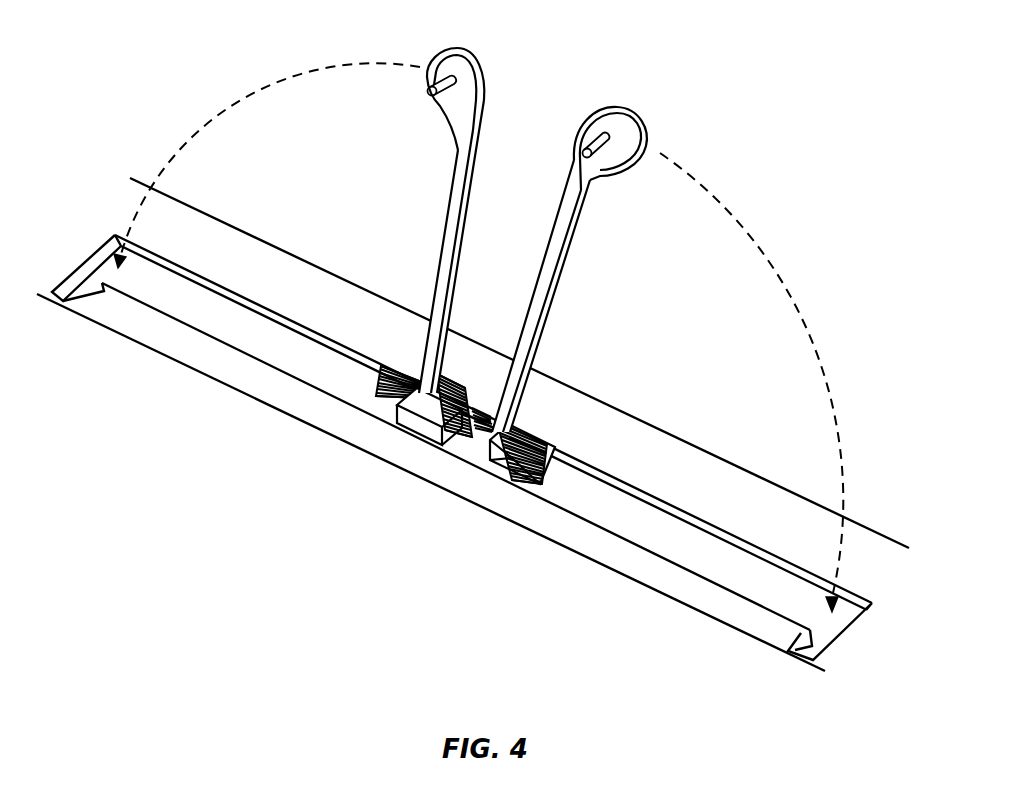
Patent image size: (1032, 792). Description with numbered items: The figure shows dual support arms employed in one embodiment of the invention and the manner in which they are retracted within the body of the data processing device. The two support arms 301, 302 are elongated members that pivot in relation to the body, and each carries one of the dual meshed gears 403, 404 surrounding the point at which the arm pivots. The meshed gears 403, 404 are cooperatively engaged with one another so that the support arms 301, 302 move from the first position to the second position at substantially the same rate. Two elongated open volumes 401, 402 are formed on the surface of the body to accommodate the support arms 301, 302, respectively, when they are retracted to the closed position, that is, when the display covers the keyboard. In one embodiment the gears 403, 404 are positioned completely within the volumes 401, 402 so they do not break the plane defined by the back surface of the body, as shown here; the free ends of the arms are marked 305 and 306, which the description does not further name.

The support arm 301 is at (609, 269).
The support arm 302 is at (416, 198).
The second lever handle 305 is at (640, 125).
The first lever handle 306 is at (427, 68).
The elongated open volume 401 is at (622, 522).
The elongated open volume 402 is at (170, 308).
The meshed gear 403 is at (498, 467).
The meshed gear 404 is at (430, 430).